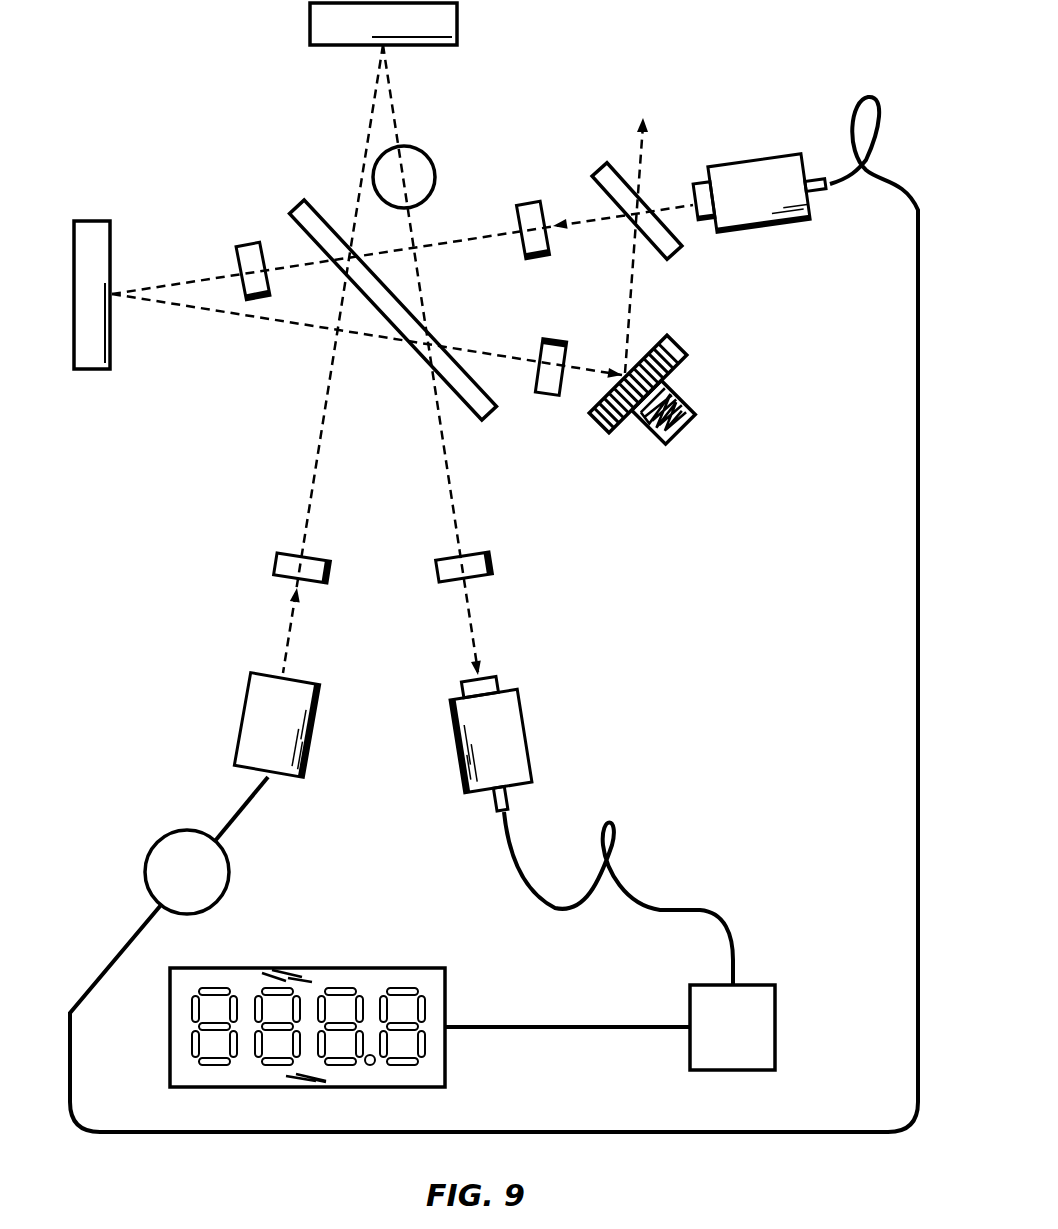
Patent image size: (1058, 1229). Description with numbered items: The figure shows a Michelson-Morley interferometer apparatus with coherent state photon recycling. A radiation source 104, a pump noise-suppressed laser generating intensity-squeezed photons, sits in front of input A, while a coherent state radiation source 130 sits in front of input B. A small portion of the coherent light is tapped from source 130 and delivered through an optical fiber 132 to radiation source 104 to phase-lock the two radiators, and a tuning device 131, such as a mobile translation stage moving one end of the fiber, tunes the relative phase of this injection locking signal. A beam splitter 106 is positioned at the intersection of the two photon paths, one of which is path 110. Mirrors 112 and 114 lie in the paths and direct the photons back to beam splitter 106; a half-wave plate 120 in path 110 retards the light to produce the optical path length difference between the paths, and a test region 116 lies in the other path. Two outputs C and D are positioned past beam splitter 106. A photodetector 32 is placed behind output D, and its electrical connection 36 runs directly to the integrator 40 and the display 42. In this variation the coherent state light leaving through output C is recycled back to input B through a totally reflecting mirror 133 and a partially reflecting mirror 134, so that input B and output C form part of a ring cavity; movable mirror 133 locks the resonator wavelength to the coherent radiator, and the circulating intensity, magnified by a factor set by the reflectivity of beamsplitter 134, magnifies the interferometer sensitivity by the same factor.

The photodetector 32 is at (530, 734).
The cable 36 is at (506, 852).
The integrator 40 is at (749, 1043).
The display 42 is at (325, 967).
The radiation source 104 is at (243, 706).
The beam splitter 106 is at (428, 350).
The photon path 110 is at (218, 316).
The mirror 112 is at (310, 20).
The mirror 114 is at (92, 221).
The test region 116 is at (455, 133).
The half-wave plate 120 is at (240, 243).
The coherent state radiation source 130 is at (790, 225).
The tuning device 131 is at (155, 842).
The optical fiber 132 is at (128, 937).
The totally reflecting mirror 133 is at (695, 425).
The partially reflecting mirror 134 is at (674, 254).
The input A is at (274, 566).
The input B is at (530, 203).
The output C is at (548, 396).
The output D is at (494, 566).